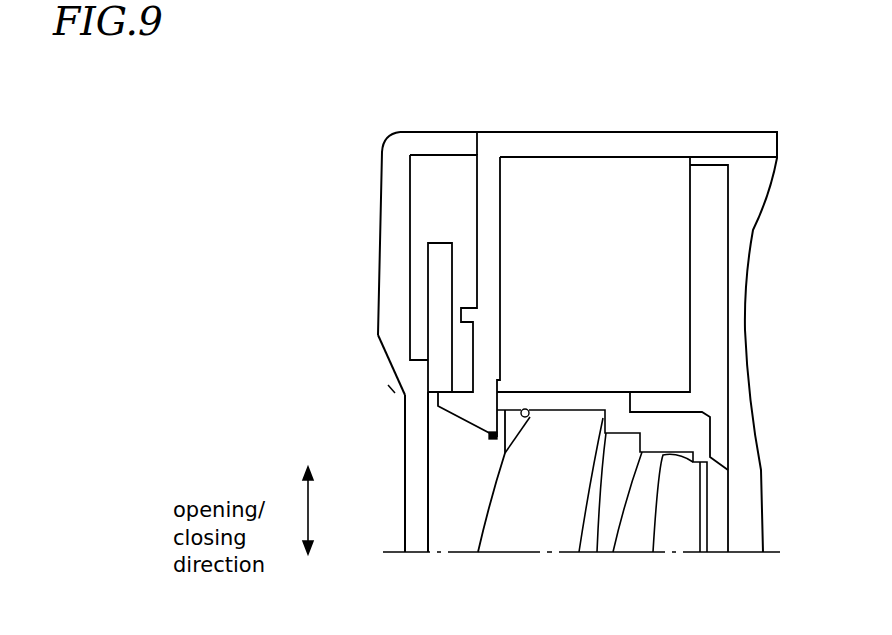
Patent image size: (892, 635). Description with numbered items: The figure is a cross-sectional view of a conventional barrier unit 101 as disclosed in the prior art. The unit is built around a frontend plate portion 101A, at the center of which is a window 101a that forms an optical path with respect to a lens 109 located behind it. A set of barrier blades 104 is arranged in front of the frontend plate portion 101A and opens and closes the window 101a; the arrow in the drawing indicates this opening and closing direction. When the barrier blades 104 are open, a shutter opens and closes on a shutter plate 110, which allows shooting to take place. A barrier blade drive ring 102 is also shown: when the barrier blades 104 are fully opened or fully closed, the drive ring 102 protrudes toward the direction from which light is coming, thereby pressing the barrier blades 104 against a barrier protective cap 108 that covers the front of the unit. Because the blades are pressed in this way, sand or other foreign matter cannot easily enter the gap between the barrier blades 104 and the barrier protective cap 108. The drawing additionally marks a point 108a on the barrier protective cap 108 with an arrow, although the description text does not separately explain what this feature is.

The barrier unit 101 is at (613, 132).
The frontend plate portion 101A is at (494, 215).
The window 101a is at (470, 428).
The barrier blade drive ring 102 is at (440, 250).
The barrier blades 104 is at (407, 492).
The barrier protective cap 108 is at (383, 328).
The edge of inclined portion 108a is at (383, 391).
The lens 109 is at (505, 532).
The shutter plate 110 is at (713, 178).